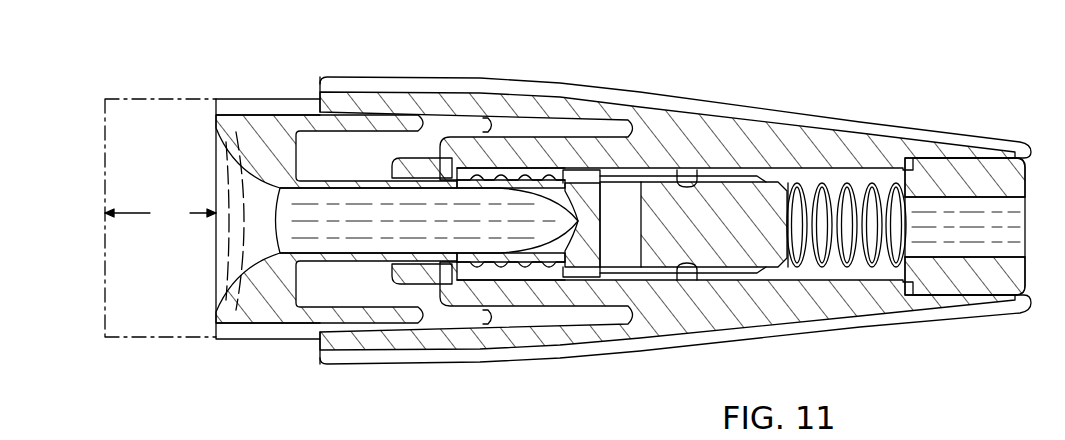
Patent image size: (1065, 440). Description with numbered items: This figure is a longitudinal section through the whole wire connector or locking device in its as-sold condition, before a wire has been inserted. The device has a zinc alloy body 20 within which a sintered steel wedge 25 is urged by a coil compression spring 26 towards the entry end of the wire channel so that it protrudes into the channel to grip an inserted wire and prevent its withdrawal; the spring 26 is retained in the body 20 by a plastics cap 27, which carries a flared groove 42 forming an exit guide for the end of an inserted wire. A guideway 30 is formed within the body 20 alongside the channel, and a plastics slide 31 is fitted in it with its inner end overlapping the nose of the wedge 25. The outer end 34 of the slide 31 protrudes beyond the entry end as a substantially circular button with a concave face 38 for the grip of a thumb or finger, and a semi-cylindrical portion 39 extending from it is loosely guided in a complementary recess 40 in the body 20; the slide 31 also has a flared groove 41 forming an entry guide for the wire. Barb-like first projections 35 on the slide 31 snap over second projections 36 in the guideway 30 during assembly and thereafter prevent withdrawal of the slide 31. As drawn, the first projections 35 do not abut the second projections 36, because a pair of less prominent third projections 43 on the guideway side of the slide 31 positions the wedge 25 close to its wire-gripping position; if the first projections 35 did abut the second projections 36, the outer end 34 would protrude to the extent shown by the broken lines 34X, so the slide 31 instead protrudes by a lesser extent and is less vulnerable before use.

The body 20 is at (748, 125).
The wedge 25 is at (728, 242).
The coil compression spring 26 is at (812, 183).
The cap 27 is at (957, 178).
The guideway 30 is at (697, 176).
The slide 31 is at (344, 184).
The outer end 34 is at (263, 275).
The broken lines 34X is at (160, 340).
The first projection 35 is at (575, 178).
The second projection 36 is at (421, 166).
The concave face 38 is at (223, 278).
The semi-cylindrical portion 39 is at (488, 122).
The recess 40 is at (540, 137).
The flared groove 41 is at (358, 236).
The flared groove 42 is at (970, 245).
The third projection 43 is at (473, 178).